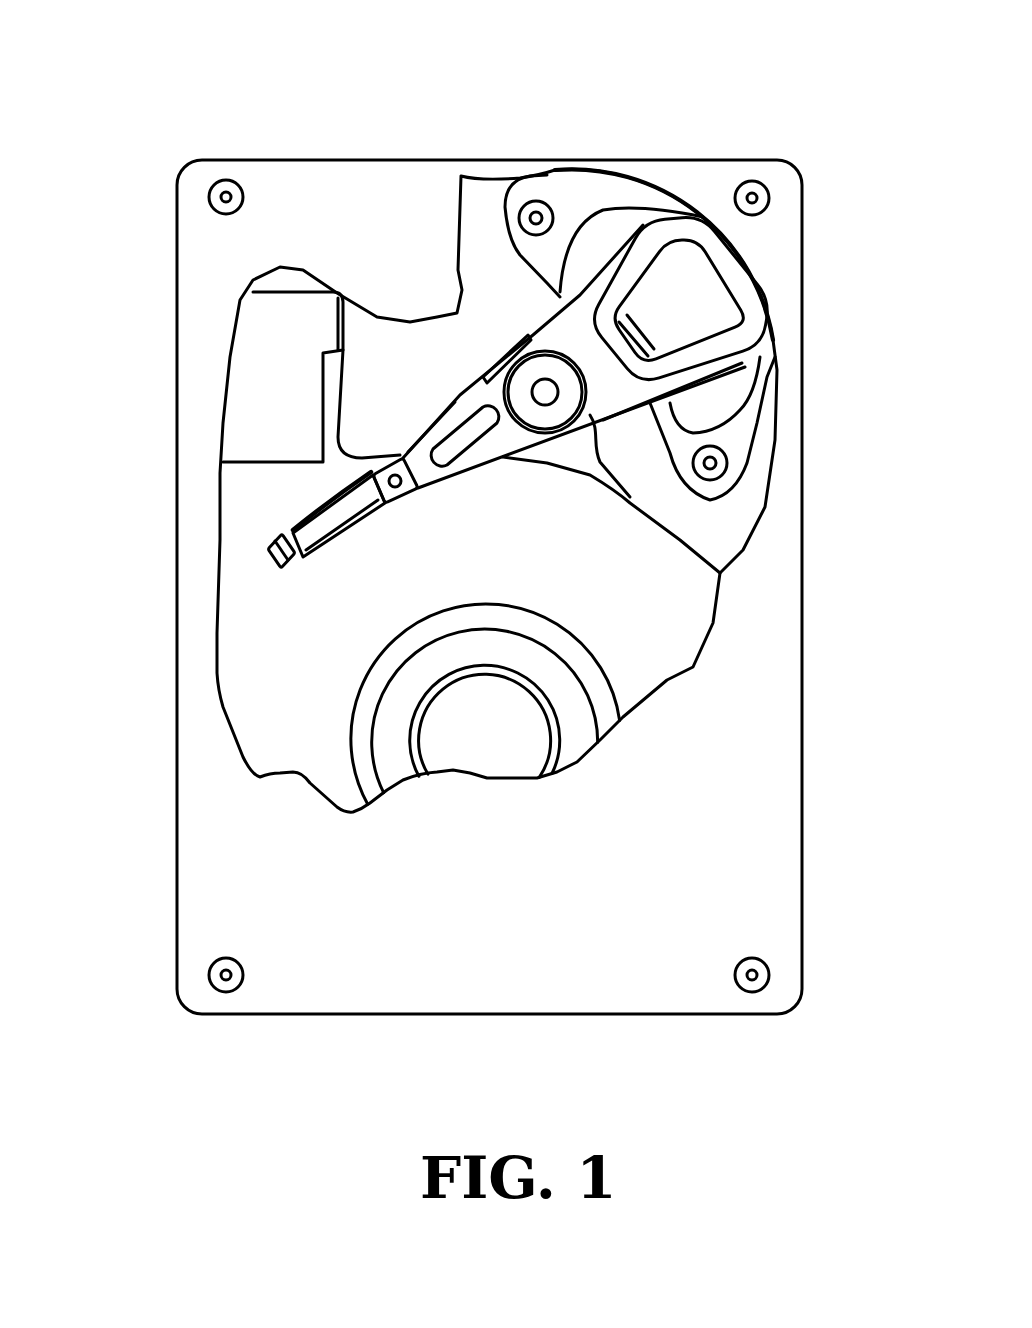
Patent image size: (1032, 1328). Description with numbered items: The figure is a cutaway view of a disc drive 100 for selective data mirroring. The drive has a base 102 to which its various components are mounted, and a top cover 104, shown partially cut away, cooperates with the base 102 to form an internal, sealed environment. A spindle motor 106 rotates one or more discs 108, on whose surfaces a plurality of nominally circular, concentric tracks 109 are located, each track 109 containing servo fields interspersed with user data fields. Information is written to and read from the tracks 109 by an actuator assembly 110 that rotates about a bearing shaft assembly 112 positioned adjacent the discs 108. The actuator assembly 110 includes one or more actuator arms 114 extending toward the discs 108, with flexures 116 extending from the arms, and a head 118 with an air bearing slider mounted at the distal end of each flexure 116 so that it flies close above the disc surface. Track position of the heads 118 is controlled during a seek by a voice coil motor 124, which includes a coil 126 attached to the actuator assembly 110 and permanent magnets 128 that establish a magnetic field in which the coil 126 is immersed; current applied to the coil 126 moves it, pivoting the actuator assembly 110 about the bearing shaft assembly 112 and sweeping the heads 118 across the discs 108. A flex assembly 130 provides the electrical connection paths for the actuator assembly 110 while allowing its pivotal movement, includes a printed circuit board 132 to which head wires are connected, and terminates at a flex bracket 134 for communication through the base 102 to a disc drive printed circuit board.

The disc drive 100 is at (230, 122).
The base 102 is at (253, 527).
The top cover 104 is at (230, 843).
The spindle motor 106 is at (483, 757).
The discs 108 is at (663, 647).
The tracks 109 is at (363, 730).
The actuator assembly 110 is at (516, 459).
The bearing shaft assembly 112 is at (563, 405).
The actuator arms 114 is at (473, 458).
The flexures 116 is at (335, 523).
The head 118 is at (278, 567).
The voice coil motor 124 is at (584, 175).
The coil 126 is at (745, 298).
The permanent magnets 128 is at (580, 250).
The flex assembly 130 is at (455, 398).
The printed circuit board 132 is at (503, 352).
The flex bracket 134 is at (270, 393).